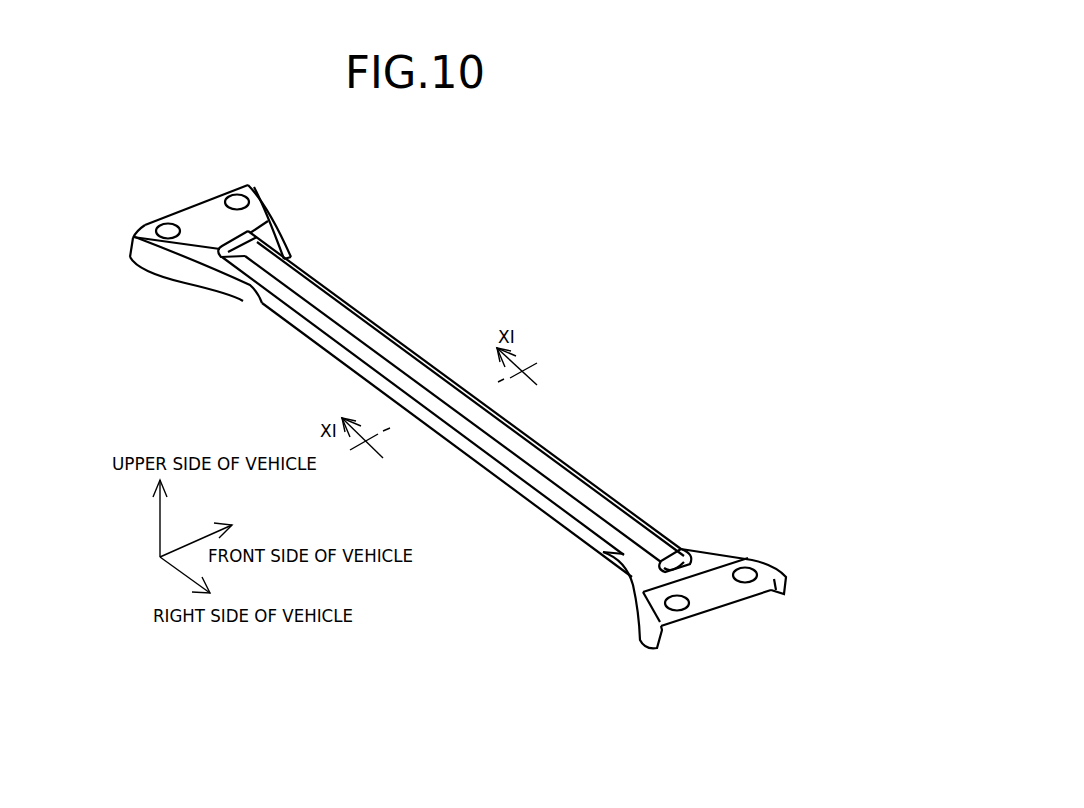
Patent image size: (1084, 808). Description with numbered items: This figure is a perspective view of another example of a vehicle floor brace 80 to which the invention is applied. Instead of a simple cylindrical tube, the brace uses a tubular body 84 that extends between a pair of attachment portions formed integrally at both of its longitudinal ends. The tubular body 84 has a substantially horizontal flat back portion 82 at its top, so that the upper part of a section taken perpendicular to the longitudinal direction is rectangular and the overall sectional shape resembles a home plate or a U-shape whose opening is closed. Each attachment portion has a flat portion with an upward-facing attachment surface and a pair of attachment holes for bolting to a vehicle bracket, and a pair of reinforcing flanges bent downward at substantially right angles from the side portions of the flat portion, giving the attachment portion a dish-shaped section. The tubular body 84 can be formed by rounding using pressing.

The vehicle floor brace 80 is at (454, 394).
The flat back portion 82 is at (372, 335).
The tubular body 84 is at (443, 458).